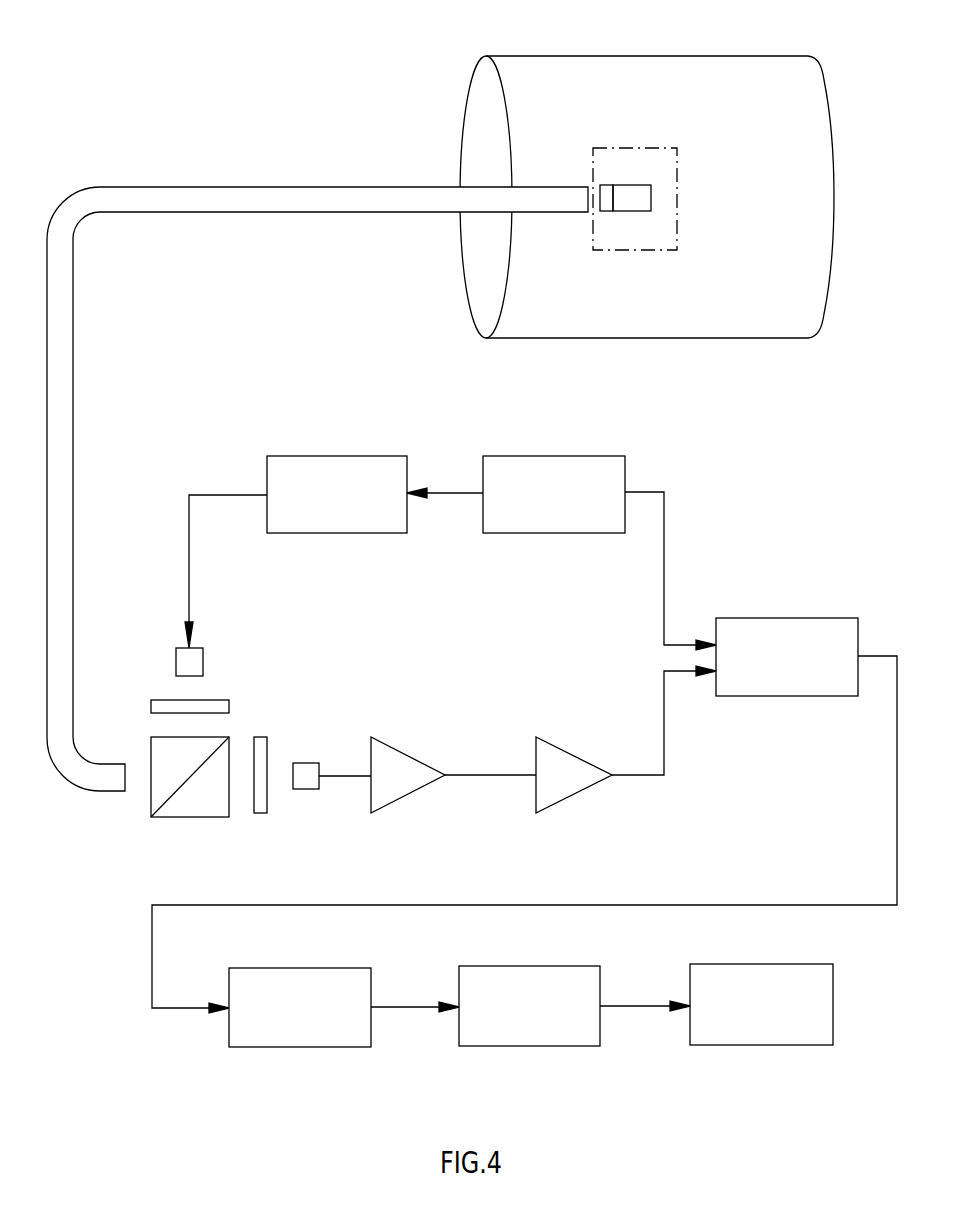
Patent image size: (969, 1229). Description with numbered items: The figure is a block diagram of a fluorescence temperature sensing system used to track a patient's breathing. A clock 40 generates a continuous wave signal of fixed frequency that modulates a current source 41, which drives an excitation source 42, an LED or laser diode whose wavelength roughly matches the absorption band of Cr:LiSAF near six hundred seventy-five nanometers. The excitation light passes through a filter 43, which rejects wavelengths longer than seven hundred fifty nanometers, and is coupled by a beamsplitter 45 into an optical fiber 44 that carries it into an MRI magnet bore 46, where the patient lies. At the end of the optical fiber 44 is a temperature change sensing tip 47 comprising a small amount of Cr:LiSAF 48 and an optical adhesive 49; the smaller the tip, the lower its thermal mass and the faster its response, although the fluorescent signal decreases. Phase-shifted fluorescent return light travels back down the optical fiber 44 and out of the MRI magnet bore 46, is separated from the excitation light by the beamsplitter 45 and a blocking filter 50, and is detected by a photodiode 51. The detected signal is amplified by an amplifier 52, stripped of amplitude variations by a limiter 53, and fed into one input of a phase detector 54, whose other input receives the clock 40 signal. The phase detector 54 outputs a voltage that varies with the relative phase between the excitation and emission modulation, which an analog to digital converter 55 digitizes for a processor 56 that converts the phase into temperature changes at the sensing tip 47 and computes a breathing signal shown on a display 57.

The clock 40 is at (557, 456).
The current source 41 is at (328, 456).
The excitation source 42 is at (203, 660).
The filter 43 is at (229, 705).
The optical fiber 44 is at (73, 417).
The beamsplitter 45 is at (178, 817).
The MRI magnet bore 46 is at (690, 56).
The temperature change sensing tip 47 is at (627, 148).
The Cr:LiSAF 48 is at (637, 212).
The optical adhesive 49 is at (605, 212).
The blocking filter 50 is at (260, 813).
The photodiode 51 is at (307, 763).
The amplifier 52 is at (393, 802).
The limiter 53 is at (565, 798).
The phase detector 54 is at (766, 696).
The analog to digital converter 55 is at (307, 1047).
The processor 56 is at (543, 1046).
The display 57 is at (758, 1045).